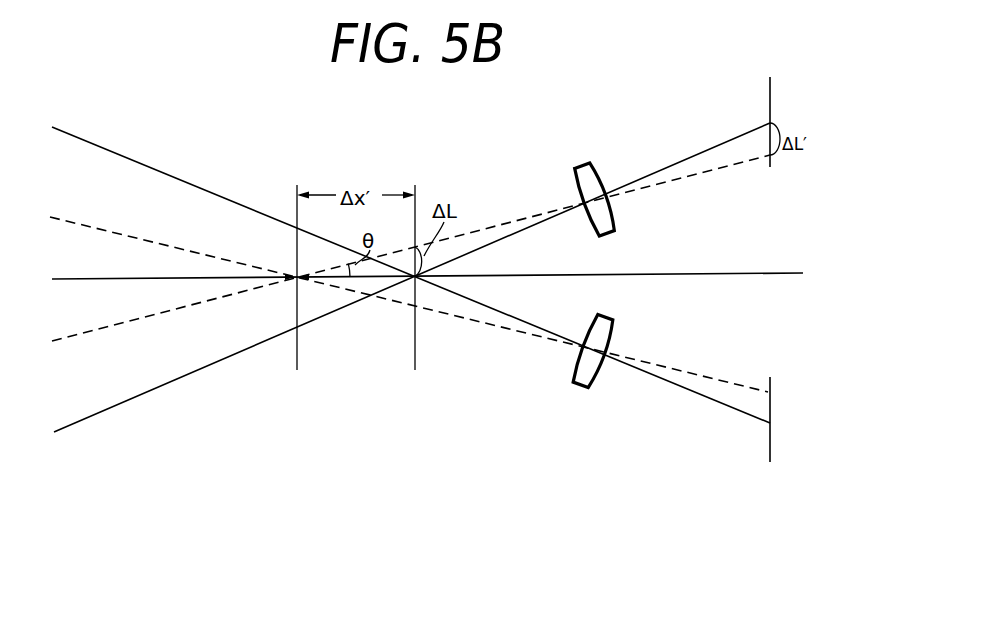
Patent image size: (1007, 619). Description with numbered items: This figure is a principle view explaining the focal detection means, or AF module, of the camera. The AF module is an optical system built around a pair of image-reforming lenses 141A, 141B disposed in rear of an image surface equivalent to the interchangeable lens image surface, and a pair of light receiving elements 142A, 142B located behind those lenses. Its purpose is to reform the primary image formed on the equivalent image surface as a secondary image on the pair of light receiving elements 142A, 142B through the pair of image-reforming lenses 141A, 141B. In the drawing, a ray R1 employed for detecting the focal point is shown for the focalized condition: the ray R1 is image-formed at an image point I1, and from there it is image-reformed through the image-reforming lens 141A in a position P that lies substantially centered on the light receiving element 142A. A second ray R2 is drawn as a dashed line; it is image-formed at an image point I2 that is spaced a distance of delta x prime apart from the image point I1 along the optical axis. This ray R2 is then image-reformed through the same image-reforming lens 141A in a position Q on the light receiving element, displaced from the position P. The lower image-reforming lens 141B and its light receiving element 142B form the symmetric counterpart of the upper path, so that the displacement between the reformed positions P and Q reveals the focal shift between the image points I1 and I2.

The image-reforming lens 141A is at (592, 176).
The image-reforming lens 141B is at (595, 386).
The light receiving element 142A is at (772, 90).
The light receiving element 142B is at (772, 423).
The ray R1 is at (207, 190).
The ray R2 is at (144, 240).
The image point I1 is at (410, 283).
The image point I2 is at (290, 282).
The position P is at (773, 123).
The position Q is at (772, 158).